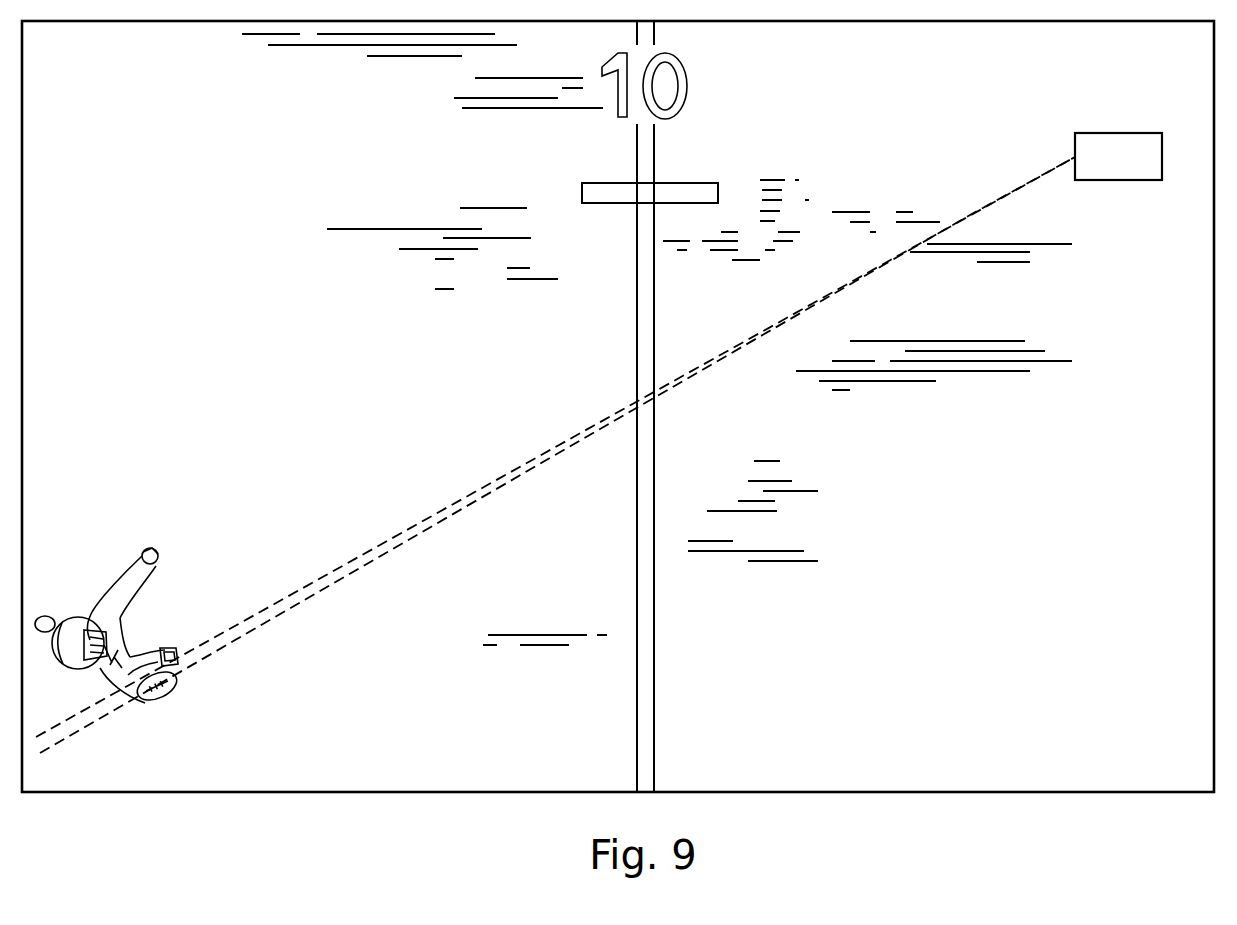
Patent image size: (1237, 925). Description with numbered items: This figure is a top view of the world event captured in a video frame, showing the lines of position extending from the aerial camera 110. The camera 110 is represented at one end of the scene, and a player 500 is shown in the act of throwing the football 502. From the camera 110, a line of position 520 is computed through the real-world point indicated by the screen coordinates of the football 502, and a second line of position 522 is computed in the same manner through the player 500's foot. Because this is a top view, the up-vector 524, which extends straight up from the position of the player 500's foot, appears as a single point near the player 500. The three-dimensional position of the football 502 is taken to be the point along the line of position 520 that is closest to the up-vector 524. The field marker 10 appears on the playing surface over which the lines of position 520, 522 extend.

The yard line marker 10 is at (644, 86).
The aerial camera 110 is at (1137, 169).
The player 500 is at (102, 597).
The football 502 is at (153, 697).
The line of position ray 520 is at (281, 618).
The line of position 522 is at (266, 611).
The up-vector 524 is at (176, 660).